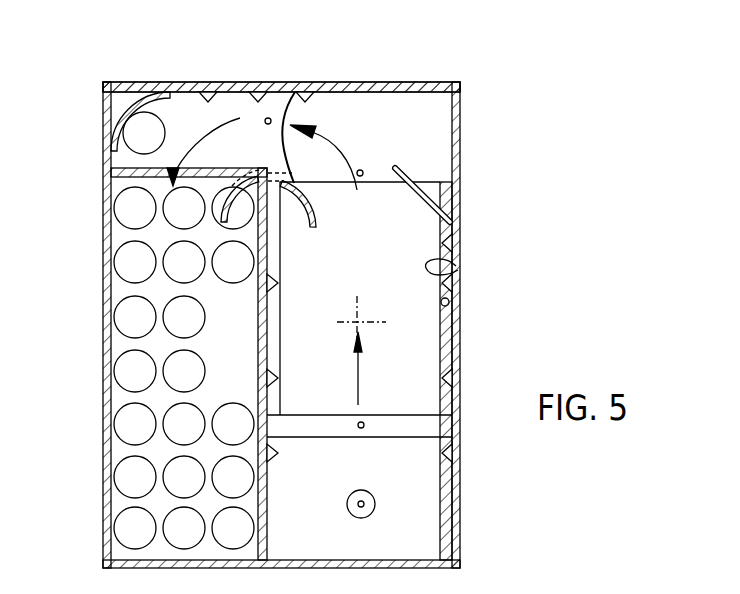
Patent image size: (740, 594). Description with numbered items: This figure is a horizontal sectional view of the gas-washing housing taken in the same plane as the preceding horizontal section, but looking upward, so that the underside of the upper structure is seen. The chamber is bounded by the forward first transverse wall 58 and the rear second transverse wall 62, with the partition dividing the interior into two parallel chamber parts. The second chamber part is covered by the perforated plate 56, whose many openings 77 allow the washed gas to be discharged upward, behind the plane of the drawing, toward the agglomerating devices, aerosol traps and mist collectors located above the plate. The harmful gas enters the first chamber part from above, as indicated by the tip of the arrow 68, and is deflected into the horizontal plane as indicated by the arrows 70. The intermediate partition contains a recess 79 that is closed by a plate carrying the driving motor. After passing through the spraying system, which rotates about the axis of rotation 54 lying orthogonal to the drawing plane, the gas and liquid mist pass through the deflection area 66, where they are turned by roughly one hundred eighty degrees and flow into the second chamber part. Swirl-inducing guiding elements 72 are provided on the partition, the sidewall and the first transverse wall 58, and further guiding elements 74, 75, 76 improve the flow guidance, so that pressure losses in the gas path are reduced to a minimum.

The axis of rotation 54 is at (357, 322).
The perforated plate 56 is at (117, 234).
The first transverse wall 58 is at (184, 82).
The second transverse wall 62 is at (428, 558).
The deflection area 66 is at (270, 117).
The arrow 68 is at (376, 502).
The arrows 70 is at (343, 148).
The guiding elements 72 is at (445, 243).
The guiding element 74 is at (440, 193).
The guiding element 75 is at (296, 92).
The guiding element 76 is at (112, 122).
The openings 77 is at (126, 280).
The recess 79 is at (456, 270).